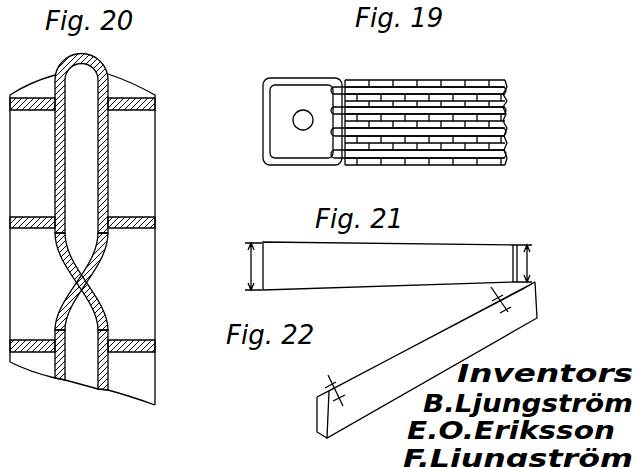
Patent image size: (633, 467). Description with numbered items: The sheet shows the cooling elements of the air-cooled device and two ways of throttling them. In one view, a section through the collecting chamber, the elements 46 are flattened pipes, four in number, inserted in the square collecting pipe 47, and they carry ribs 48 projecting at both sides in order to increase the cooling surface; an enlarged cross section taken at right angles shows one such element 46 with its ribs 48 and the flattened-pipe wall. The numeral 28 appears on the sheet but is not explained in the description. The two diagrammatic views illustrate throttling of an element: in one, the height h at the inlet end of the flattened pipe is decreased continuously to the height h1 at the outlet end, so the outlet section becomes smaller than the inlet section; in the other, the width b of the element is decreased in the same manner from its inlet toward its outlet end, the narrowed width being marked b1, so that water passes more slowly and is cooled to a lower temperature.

In FIG. 19, the sheet reference 28 is at (279, 10).
In FIG. 20, the element 46 is at (108, 162).
In FIG. 19, the element 46 is at (502, 90).
In FIG. 19, the collecting pipe 47 is at (285, 93).
In FIG. 20, the ribs 48 is at (128, 215).
In FIG. 19, the ribs 48 is at (390, 88).
In FIG. 21, the height at the inlet end h is at (249, 266).
In FIG. 21, the height at the outlet end h1 is at (530, 267).
In FIG. 22, the width of the element b is at (334, 381).
In FIG. 22, the width b1 is at (490, 305).